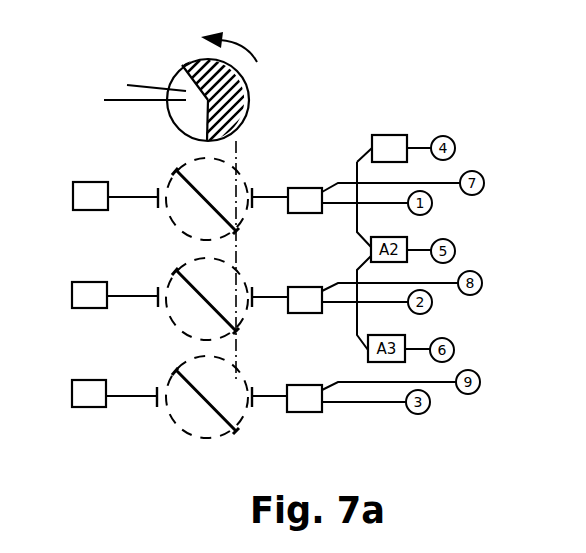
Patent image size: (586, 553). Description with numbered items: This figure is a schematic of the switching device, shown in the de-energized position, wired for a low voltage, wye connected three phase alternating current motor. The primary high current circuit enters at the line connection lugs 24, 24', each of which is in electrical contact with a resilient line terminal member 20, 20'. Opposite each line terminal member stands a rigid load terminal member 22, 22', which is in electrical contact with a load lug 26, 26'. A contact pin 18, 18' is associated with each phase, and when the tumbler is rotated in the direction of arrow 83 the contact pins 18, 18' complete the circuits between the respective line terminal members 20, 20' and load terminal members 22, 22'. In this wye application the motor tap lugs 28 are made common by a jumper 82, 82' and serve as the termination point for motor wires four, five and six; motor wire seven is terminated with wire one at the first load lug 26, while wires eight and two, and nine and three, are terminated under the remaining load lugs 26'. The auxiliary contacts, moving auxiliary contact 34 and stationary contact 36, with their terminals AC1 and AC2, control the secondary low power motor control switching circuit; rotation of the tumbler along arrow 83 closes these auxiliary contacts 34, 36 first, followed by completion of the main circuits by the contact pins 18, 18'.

The contact pin 18 is at (207, 199).
The contact pin 18' is at (207, 348).
The resilient line terminal member 20 is at (140, 210).
The resilient line terminal member 20' is at (140, 359).
The rigid load terminal member 22 is at (265, 210).
The rigid load terminal member 22' is at (267, 359).
The line connection lug 24 is at (82, 183).
The line connection lug 24' is at (78, 330).
The load lug 26 is at (300, 184).
The load lug 26' is at (290, 337).
The motor tap lug 28 is at (386, 135).
The moving auxiliary contact 34 is at (138, 84).
The stationary contact 36 is at (152, 104).
The jumper 82 is at (347, 243).
The jumper 82' is at (339, 260).
The arrow 83 is at (232, 45).
The aperture segment 1 AC1 is at (141, 80).
The aperture segment 2 AC2 is at (129, 100).